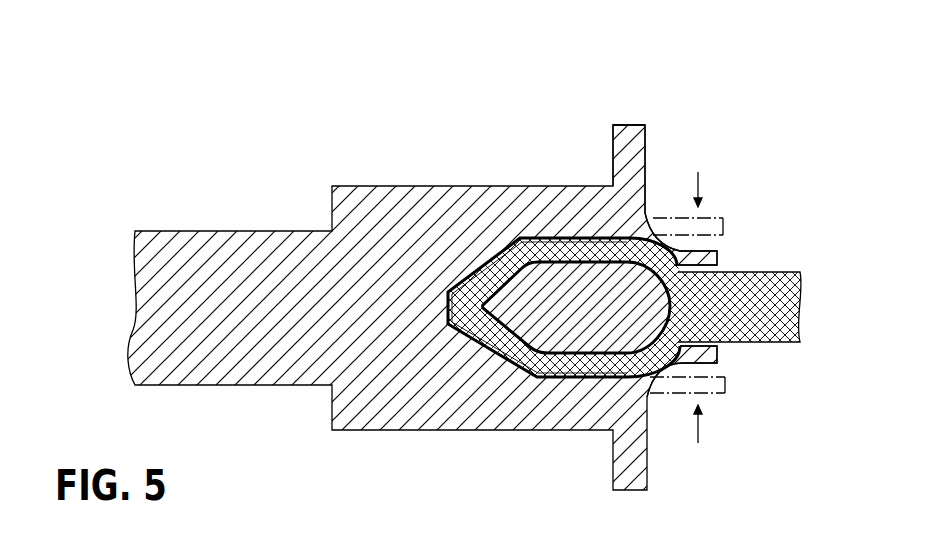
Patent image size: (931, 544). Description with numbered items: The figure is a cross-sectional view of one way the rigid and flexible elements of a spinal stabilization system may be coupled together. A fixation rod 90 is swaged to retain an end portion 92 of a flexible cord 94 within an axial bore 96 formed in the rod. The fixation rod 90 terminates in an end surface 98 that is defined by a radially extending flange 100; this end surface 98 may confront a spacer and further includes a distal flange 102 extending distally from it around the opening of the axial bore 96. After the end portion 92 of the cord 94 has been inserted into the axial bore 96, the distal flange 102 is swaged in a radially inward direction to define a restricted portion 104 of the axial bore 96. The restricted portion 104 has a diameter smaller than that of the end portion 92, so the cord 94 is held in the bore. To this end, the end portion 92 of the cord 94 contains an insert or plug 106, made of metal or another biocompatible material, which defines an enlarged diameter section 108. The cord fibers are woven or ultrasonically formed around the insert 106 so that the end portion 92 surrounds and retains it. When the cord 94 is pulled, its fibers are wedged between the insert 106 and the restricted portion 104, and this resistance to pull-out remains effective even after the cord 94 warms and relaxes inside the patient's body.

The fixation rod 90 is at (238, 226).
The end portion 92 is at (502, 267).
The flexible cord 94 is at (777, 350).
The axial bore 96 is at (585, 270).
The end surface 98 is at (647, 148).
The radially extending flange 100 is at (630, 124).
The distal flange 102 is at (717, 256).
The restricted portion 104 is at (697, 353).
The insert 106 is at (585, 315).
The enlarged diameter section 108 is at (582, 377).